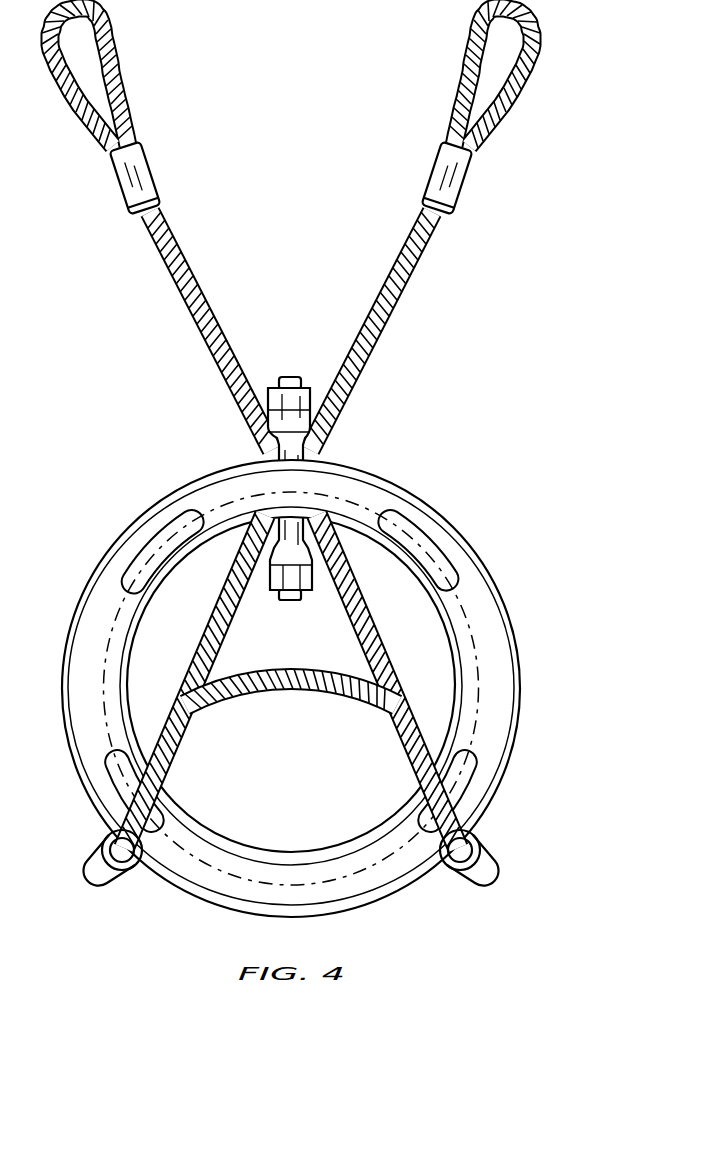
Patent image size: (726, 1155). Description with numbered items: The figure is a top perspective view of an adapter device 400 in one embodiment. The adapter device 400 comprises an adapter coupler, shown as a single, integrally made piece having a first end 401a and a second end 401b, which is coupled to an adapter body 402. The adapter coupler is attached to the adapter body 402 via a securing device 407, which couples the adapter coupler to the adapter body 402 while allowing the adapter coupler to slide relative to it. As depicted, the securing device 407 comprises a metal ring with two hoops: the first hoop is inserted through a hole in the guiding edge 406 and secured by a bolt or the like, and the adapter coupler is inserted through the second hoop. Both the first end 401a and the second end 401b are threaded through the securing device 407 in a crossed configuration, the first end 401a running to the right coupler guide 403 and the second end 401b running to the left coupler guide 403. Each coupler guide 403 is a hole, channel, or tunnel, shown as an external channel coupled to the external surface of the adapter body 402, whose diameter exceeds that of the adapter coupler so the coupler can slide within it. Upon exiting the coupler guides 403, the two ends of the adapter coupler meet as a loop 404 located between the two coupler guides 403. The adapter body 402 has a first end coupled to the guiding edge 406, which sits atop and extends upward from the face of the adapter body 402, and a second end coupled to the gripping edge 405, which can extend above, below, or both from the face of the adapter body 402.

The adapter device 400 is at (320, 474).
The first end 401a is at (165, 277).
The second end 401b is at (415, 288).
The adapter body 402 is at (325, 696).
The coupler guide 403 is at (492, 843).
The loop 404 is at (316, 693).
The gripping edge 405 is at (230, 885).
The guiding edge 406 is at (197, 500).
The securing device 407 is at (290, 377).